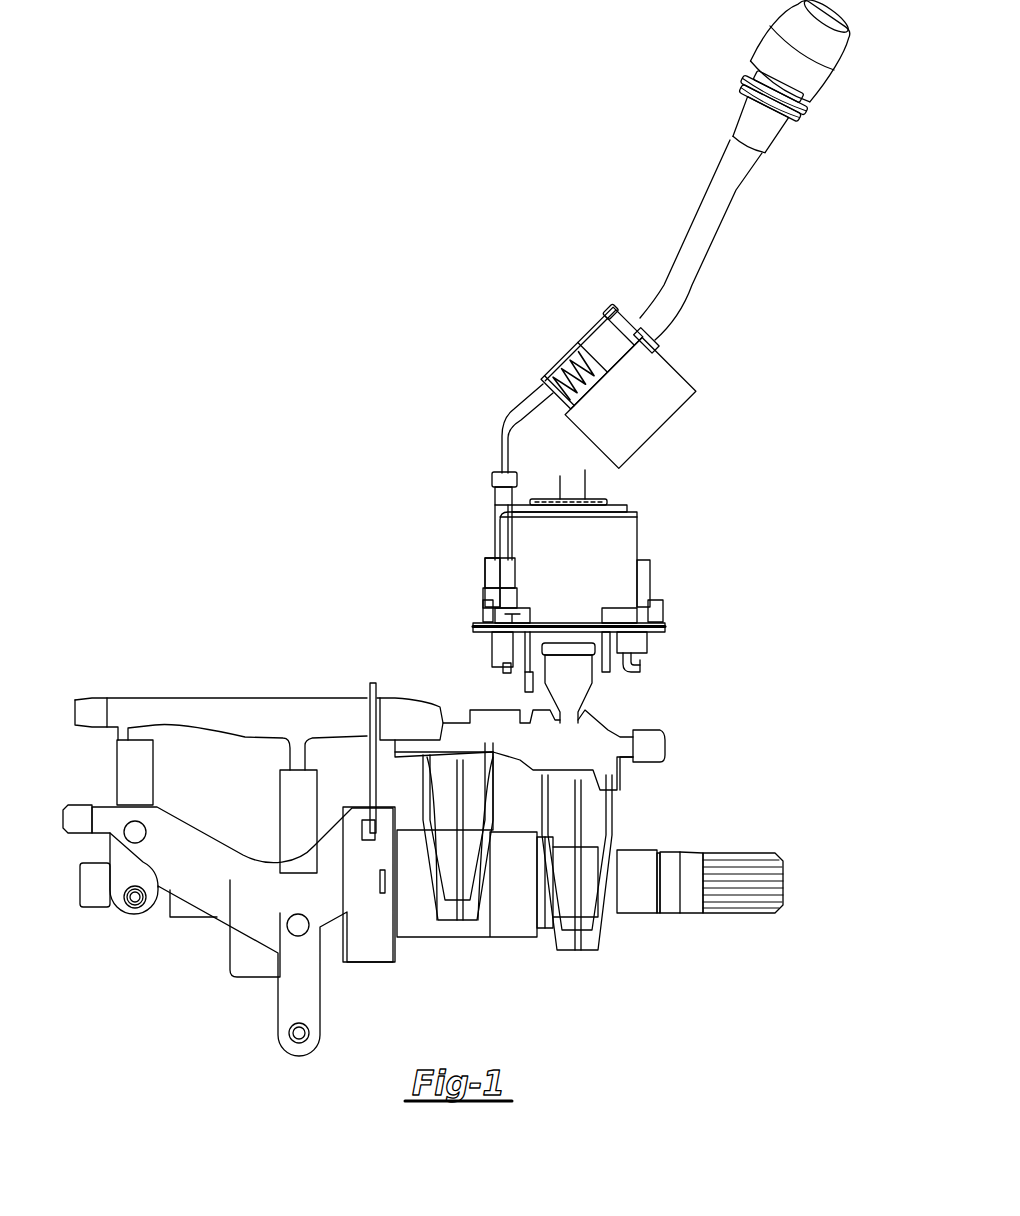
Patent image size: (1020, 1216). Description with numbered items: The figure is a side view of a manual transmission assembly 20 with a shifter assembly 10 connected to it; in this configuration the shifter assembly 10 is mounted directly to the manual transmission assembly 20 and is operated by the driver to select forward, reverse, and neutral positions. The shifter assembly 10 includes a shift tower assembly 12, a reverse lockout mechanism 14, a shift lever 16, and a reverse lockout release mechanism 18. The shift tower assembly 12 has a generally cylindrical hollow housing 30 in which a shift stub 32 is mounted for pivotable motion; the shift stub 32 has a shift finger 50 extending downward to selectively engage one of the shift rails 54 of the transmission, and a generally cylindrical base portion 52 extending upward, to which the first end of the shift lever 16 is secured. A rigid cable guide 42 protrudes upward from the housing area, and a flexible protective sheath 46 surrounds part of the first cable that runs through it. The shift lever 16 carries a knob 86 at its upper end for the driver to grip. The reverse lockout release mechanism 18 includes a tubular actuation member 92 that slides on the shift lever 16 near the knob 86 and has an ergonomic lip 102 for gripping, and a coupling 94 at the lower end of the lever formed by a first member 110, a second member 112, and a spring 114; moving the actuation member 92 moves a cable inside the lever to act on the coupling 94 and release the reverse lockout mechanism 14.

The shifter assembly 10 is at (516, 298).
The shift tower assembly 12 is at (640, 514).
The reverse lockout mechanism 14 is at (645, 673).
The shift lever 16 is at (706, 276).
The reverse lockout release mechanism 18 is at (543, 368).
The manual transmission assembly 20 is at (460, 962).
The housing 30 is at (612, 552).
The shift stub 32 is at (586, 476).
The cable guide 42 is at (497, 502).
The protective sheath 46 is at (499, 446).
The shift finger 50 is at (578, 683).
The base portion 52 is at (668, 402).
The shift rails 54 is at (588, 720).
The knob 86 is at (766, 43).
The actuation member 92 is at (748, 112).
The coupling 94 is at (560, 350).
The lip 102 is at (802, 124).
The first member 110 is at (646, 349).
The second member 112 is at (622, 306).
The spring 114 is at (558, 362).